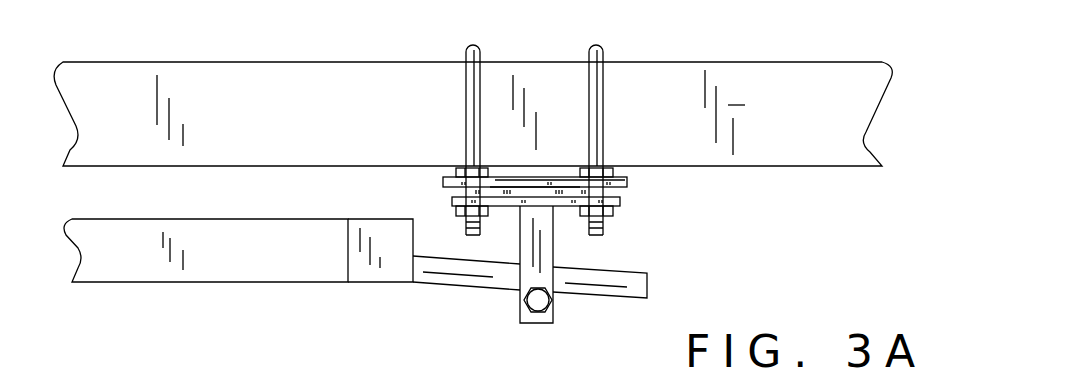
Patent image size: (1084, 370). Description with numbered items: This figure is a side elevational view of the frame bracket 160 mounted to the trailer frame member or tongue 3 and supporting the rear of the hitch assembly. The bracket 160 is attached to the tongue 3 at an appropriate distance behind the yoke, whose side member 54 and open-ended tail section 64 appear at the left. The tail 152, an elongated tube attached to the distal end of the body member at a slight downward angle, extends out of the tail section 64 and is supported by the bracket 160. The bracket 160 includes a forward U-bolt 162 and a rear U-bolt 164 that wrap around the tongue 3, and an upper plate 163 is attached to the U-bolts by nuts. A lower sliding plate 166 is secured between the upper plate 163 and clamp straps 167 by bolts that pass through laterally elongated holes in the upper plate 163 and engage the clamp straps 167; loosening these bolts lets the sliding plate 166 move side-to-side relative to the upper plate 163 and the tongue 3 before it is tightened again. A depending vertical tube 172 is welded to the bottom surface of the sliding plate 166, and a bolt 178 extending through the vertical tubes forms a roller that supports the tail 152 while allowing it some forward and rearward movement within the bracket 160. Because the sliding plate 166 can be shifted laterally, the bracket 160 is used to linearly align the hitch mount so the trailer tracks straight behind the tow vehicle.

The trailer frame member or tongue 3 is at (737, 100).
The frame bracket 160 is at (617, 105).
The forward U-bolt 162 is at (472, 45).
The rear U-bolt 164 is at (596, 45).
The upper plate 163 is at (625, 182).
The lower sliding plate 166 is at (526, 186).
The clamp straps 167 is at (620, 202).
The vertical tube 172 is at (541, 243).
The bolt 178 is at (550, 308).
The tail 152 is at (618, 280).
The side member 54 is at (303, 258).
The tail section 64 is at (393, 262).